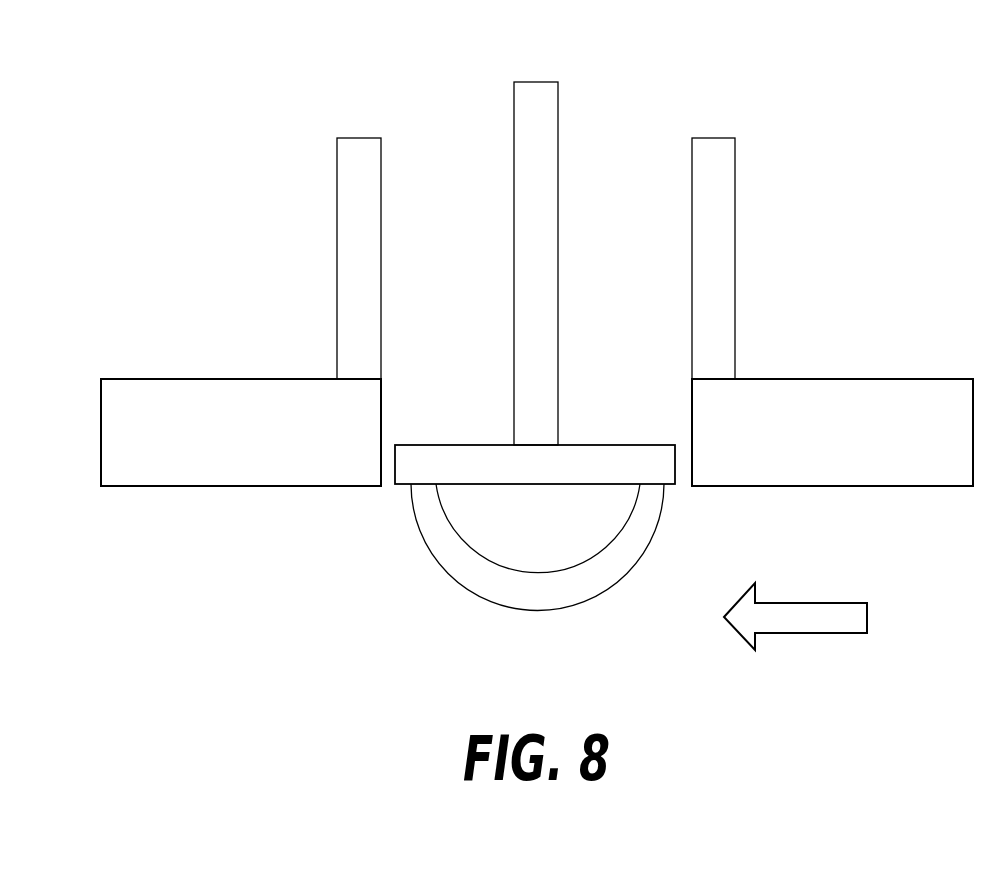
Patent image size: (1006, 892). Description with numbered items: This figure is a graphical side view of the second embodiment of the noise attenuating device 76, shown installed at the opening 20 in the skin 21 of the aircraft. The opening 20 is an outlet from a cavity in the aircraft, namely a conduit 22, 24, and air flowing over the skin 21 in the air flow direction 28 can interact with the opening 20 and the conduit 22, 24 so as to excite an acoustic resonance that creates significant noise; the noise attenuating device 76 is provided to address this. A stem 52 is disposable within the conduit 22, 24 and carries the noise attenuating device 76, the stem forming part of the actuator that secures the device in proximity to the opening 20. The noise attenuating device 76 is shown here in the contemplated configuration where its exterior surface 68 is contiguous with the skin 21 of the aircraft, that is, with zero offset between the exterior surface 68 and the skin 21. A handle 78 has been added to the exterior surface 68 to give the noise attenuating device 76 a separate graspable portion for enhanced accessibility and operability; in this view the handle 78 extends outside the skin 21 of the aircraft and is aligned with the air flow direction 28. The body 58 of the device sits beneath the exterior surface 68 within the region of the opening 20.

The opening 20 is at (389, 475).
The skin 21 is at (208, 486).
The conduit 22 is at (586, 258).
The conduit 24 is at (735, 207).
The air flow direction 28 is at (788, 633).
The stem 52 is at (558, 113).
The plate 58 is at (472, 445).
The exterior surface 68 is at (607, 484).
The noise attenuating device 76 is at (624, 428).
The handle 78 is at (537, 617).